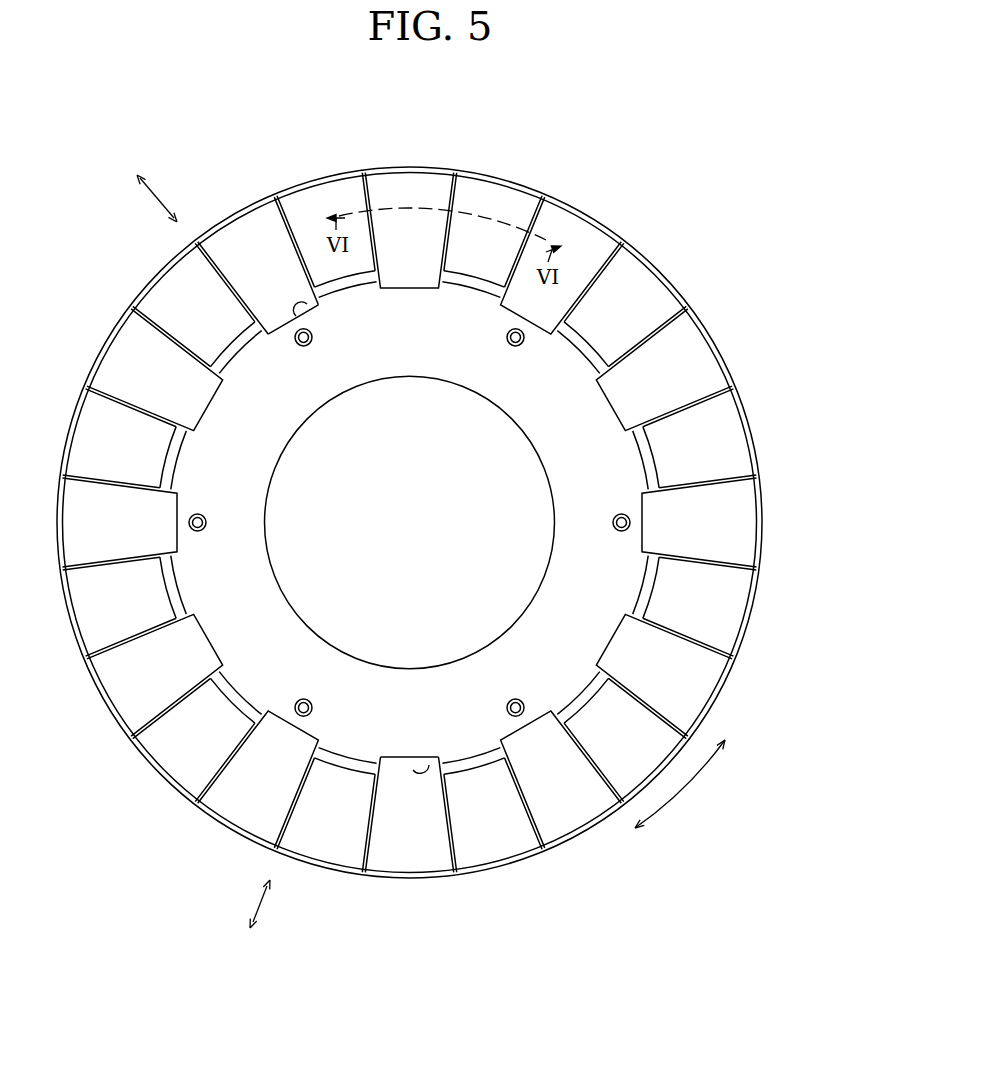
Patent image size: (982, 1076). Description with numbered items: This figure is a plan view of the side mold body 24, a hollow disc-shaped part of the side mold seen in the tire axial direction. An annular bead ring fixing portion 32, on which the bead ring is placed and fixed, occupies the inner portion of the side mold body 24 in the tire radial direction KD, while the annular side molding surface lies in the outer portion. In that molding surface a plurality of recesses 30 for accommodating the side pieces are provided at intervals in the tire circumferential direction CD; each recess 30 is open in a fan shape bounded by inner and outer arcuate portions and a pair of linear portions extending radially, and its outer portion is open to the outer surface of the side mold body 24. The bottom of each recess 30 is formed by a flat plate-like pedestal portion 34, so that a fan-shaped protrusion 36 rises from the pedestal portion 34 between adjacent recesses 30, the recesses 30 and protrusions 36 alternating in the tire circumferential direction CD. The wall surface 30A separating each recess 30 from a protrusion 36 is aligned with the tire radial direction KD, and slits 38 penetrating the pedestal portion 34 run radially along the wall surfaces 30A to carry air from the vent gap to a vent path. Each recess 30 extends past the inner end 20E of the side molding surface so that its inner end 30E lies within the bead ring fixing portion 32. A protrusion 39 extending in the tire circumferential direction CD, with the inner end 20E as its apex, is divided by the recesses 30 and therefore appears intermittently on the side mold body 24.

The side mold body 24 is at (411, 136).
The recess 30 is at (578, 228).
The wall surface 30A is at (222, 271).
The inner end of the recess 30E is at (316, 306).
The bead ring fixing portion 32 is at (398, 690).
The pedestal portion 34 is at (590, 805).
The protrusion 36 is at (490, 190).
The slit 38 is at (222, 783).
The protrusion 39 is at (657, 600).
The inner end of the side molding surface 20E is at (332, 756).
The tire radial direction KD is at (210, 551).
The tire circumferential direction CD is at (680, 784).